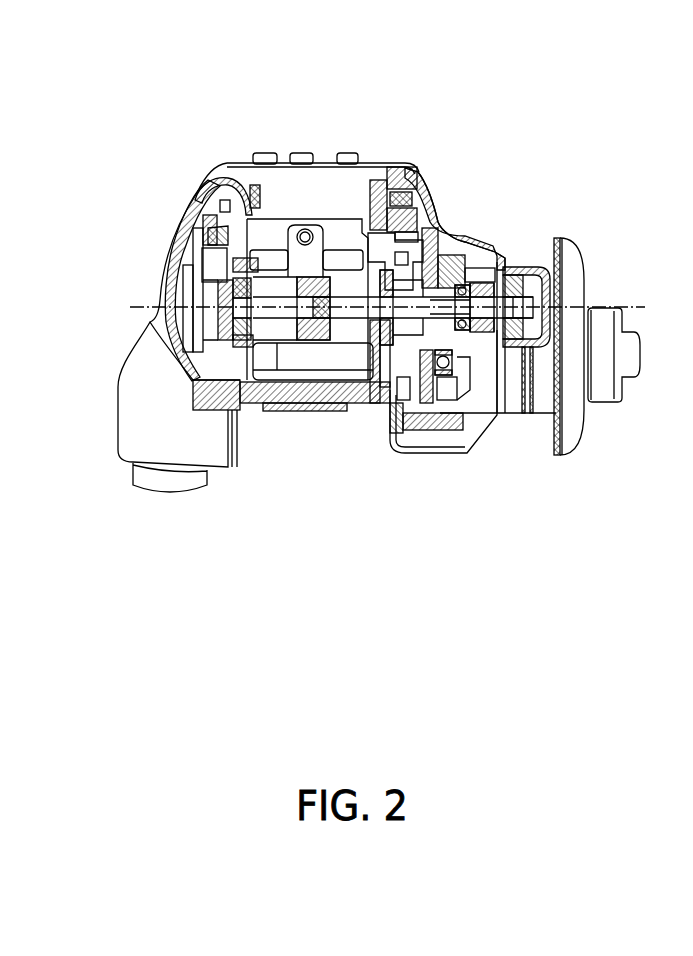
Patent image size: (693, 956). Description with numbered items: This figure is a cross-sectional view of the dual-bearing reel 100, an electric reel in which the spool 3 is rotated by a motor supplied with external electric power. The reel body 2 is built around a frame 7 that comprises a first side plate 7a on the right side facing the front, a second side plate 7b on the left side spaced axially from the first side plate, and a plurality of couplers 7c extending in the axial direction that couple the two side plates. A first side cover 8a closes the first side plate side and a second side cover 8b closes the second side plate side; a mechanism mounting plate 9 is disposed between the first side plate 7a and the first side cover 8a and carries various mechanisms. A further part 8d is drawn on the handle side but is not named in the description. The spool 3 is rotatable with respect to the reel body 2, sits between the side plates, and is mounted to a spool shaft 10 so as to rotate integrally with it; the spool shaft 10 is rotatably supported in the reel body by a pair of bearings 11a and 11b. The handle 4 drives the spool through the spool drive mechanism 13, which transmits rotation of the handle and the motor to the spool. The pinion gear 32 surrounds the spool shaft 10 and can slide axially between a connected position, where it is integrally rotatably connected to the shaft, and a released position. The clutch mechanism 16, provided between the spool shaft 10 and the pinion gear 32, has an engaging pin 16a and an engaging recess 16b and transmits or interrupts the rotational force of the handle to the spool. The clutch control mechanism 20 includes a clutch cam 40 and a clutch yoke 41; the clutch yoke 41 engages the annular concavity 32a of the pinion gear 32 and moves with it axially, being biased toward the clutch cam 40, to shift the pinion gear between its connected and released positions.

The dual-bearing reel 100 is at (288, 112).
The reel body 2 is at (215, 176).
The frame 7 is at (265, 215).
The first side plate 7a is at (365, 214).
The second side plate 7b is at (202, 215).
The couplers 7c is at (243, 400).
The first side cover 8a is at (433, 188).
The second side cover 8b is at (196, 250).
The cap member 8d is at (523, 267).
The handle 4 is at (597, 320).
The bearing 11b is at (200, 300).
The spool shaft 10 is at (215, 340).
The spool 3 is at (290, 400).
The engaging pin 16a is at (350, 385).
The clutch mechanism 16 is at (365, 365).
The engaging recess 16b is at (412, 276).
The spool drive mechanism 13 is at (383, 413).
The pinion gear 32 is at (397, 410).
The mechanism mounting plate 9 is at (445, 440).
The clutch cam 40 is at (428, 415).
The clutch control mechanism 20 is at (467, 400).
The annular concavity 32a is at (497, 362).
The bearing 11a is at (547, 387).
The clutch yoke 41 is at (480, 248).